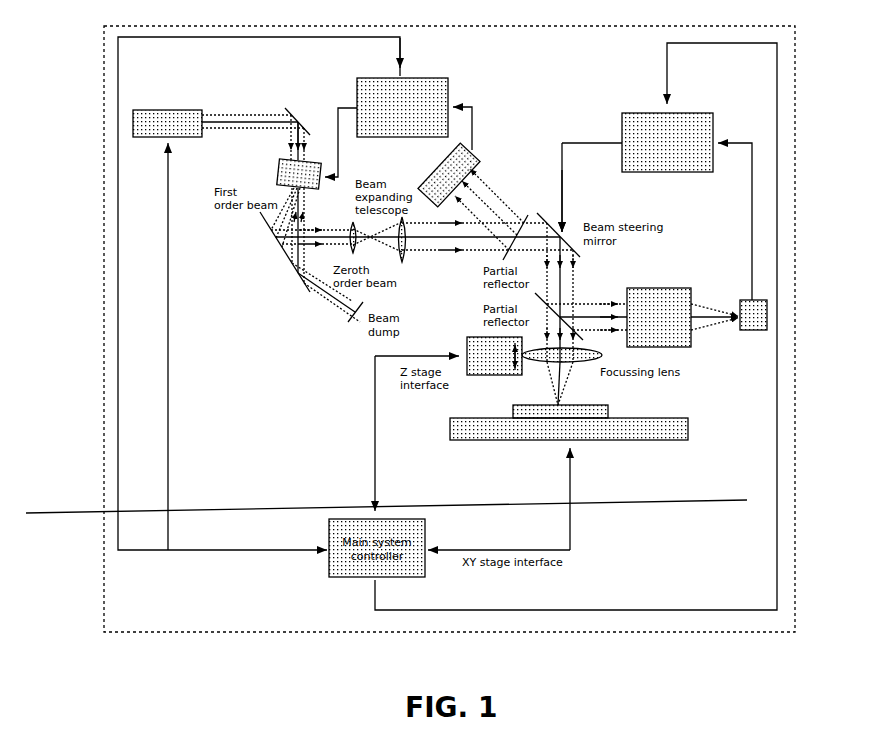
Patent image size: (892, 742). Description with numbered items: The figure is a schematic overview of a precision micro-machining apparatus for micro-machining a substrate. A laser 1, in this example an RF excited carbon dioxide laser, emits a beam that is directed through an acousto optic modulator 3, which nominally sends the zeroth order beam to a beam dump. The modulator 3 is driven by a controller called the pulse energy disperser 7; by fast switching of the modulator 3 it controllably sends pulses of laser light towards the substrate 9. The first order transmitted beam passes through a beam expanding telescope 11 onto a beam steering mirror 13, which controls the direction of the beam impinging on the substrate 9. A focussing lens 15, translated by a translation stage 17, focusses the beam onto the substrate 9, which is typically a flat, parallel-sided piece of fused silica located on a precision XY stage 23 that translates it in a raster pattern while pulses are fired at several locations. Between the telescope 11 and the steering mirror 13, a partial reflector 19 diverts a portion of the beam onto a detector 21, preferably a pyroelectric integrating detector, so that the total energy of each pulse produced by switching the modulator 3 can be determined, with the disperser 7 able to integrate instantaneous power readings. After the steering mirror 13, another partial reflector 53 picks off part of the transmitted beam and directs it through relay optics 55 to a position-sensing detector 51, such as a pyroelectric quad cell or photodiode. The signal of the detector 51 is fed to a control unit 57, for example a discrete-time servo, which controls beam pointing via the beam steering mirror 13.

The laser 1 is at (190, 120).
The acousto optic modulator 3 is at (283, 163).
The pulse energy disperser 7 is at (437, 87).
The substrate 9 is at (600, 415).
The beam expanding telescope 11 is at (387, 253).
The beam steering mirror 13 is at (583, 257).
The focussing lens 15 is at (537, 362).
The translation stage 17 is at (472, 348).
The partial reflector 19 is at (530, 213).
The detector 21 is at (470, 168).
The precision XY stage 23 is at (688, 430).
The position-sensing detector 51 is at (758, 308).
The partial reflector 53 is at (501, 308).
The relay optics 55 is at (671, 297).
The control unit 57 is at (636, 127).